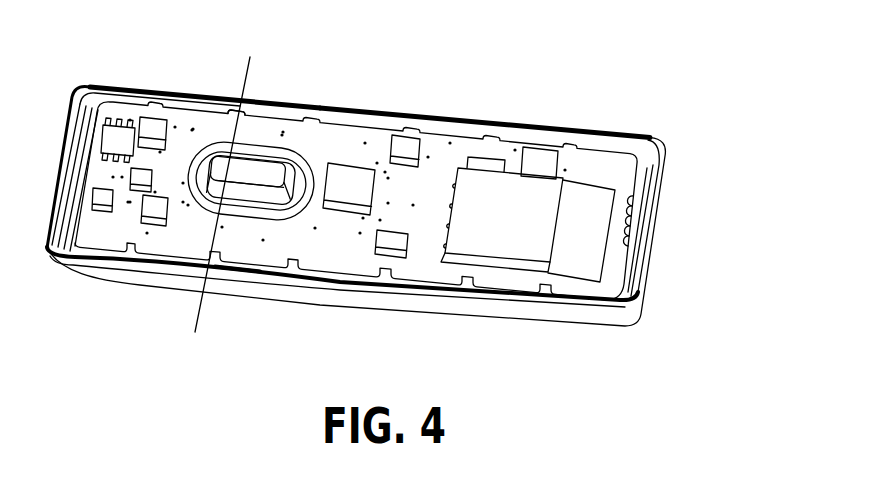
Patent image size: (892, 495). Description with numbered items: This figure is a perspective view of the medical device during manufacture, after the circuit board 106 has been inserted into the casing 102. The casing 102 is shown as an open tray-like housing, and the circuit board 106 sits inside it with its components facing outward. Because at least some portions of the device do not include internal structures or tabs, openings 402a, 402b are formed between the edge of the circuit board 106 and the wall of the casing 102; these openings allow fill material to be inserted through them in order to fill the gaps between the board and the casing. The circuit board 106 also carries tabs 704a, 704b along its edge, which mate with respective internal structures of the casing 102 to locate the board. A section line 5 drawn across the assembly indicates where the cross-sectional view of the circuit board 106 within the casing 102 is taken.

The casing 102 is at (633, 147).
The circuit board 106 is at (443, 134).
The opening 402a is at (274, 101).
The opening 402b is at (363, 112).
The tab 704a is at (233, 110).
The tab 704b is at (237, 272).
The section line 5 is at (163, 332).